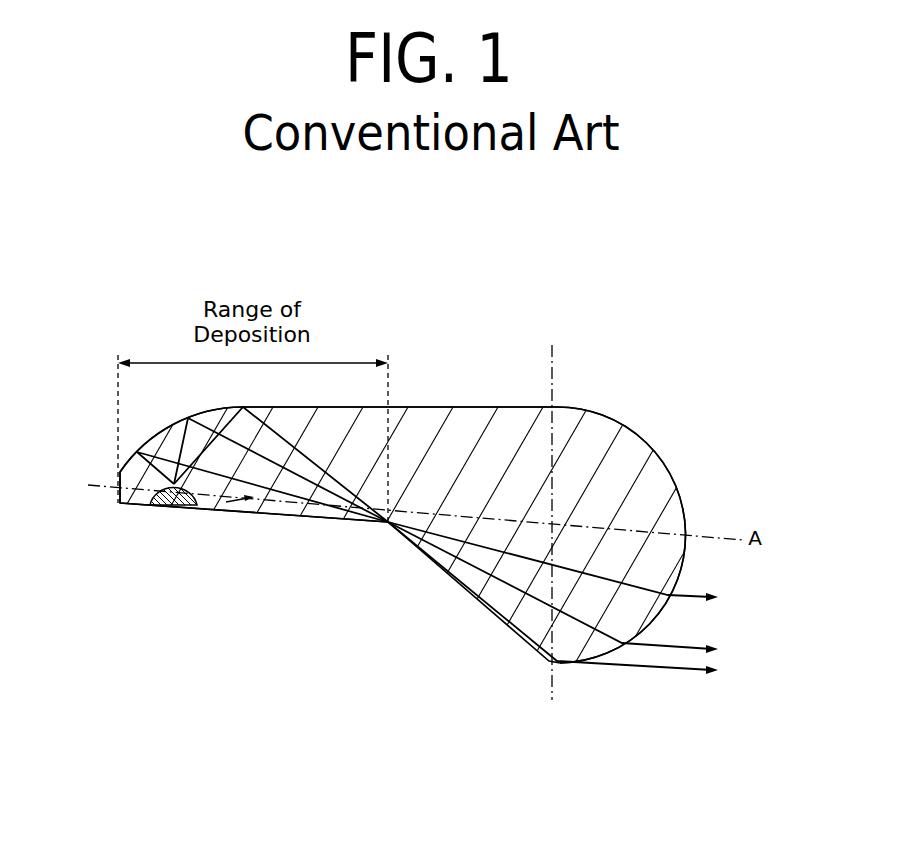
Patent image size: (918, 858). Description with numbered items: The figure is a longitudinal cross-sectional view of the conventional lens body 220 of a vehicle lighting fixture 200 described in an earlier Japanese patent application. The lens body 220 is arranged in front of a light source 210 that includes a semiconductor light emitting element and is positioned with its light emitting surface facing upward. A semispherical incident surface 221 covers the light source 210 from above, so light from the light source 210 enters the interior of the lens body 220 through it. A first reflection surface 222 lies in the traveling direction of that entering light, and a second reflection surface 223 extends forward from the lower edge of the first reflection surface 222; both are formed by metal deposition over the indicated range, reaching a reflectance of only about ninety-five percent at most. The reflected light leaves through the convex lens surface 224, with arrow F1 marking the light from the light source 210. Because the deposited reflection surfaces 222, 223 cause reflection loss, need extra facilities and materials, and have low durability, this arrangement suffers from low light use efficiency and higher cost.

The vehicle lighting fixture 200 is at (394, 489).
The light source 210 is at (178, 507).
The lens body 220 is at (476, 406).
The incident surface 221 is at (140, 499).
The first reflection surface 222 is at (179, 423).
The second reflection surface 223 is at (318, 516).
The convex lens surface 224 is at (666, 461).
The light emission direction F1 is at (167, 509).